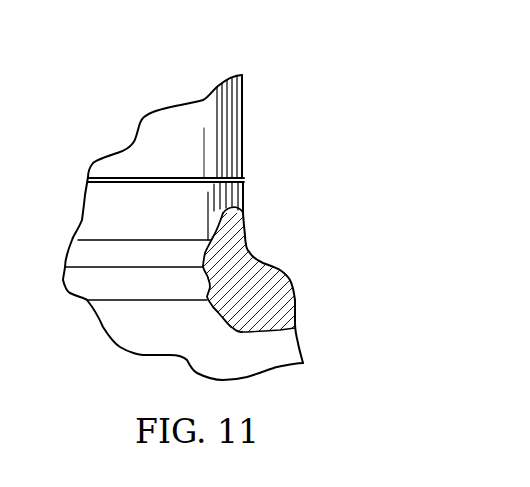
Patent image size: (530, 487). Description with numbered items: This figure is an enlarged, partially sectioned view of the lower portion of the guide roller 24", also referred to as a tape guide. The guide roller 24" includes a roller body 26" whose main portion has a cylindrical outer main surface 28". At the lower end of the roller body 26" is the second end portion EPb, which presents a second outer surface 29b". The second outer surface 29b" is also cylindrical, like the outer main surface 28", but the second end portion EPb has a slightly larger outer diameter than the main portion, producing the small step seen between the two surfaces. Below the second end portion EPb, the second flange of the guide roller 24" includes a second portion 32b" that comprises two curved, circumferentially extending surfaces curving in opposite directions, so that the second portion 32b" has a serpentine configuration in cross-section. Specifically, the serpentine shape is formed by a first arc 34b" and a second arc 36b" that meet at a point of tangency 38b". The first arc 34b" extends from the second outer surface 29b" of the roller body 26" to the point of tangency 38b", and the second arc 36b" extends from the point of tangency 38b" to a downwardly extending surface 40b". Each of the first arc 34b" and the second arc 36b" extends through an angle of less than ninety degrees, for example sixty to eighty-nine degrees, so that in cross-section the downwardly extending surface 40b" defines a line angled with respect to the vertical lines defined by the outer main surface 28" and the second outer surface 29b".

The guide roller 24 is at (328, 102).
The roller body 26 is at (265, 102).
The outer main surface 28 is at (243, 160).
The second outer surface 29b is at (250, 226).
The first arc 34b is at (255, 247).
The point of tangency 38b is at (275, 270).
The second portion 32b is at (284, 264).
The second arc 36b is at (292, 287).
The downwardly extending surface 40b is at (298, 313).
The second end portion EPb is at (72, 212).